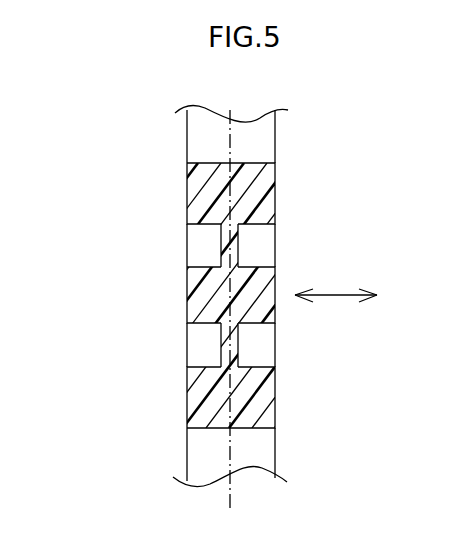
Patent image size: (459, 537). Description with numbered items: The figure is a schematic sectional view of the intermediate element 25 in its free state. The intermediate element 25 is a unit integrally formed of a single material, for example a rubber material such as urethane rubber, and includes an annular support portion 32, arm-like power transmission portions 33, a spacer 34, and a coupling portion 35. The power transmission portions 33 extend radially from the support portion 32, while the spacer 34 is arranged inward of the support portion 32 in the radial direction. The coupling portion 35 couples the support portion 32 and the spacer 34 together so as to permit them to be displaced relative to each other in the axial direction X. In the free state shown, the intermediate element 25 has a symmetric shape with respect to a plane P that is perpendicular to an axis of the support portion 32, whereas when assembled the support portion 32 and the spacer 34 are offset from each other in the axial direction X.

The intermediate element 25 is at (284, 179).
The annular support portion 32 is at (212, 190).
The power transmission portion 33 is at (198, 137).
The spacer 34 is at (207, 302).
The coupling portion 35 is at (225, 239).
The axial direction X is at (341, 294).
The plane P is at (232, 490).